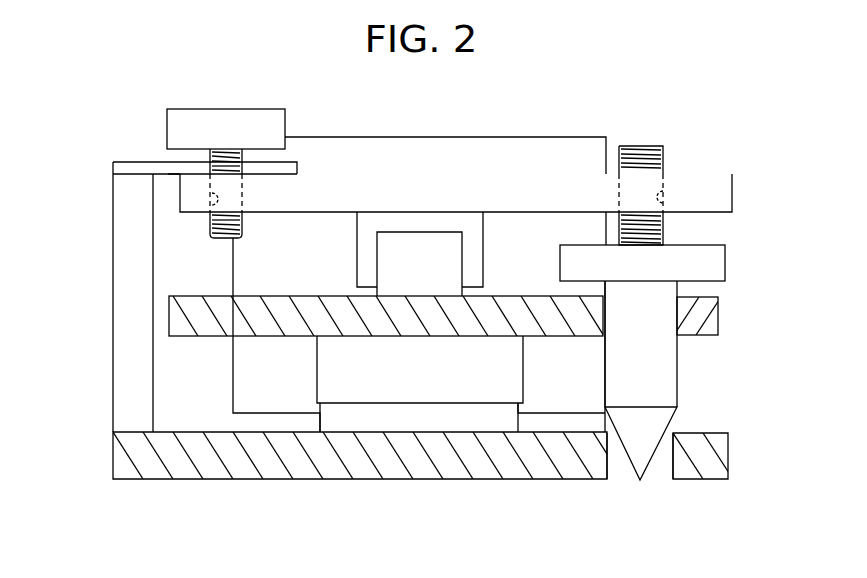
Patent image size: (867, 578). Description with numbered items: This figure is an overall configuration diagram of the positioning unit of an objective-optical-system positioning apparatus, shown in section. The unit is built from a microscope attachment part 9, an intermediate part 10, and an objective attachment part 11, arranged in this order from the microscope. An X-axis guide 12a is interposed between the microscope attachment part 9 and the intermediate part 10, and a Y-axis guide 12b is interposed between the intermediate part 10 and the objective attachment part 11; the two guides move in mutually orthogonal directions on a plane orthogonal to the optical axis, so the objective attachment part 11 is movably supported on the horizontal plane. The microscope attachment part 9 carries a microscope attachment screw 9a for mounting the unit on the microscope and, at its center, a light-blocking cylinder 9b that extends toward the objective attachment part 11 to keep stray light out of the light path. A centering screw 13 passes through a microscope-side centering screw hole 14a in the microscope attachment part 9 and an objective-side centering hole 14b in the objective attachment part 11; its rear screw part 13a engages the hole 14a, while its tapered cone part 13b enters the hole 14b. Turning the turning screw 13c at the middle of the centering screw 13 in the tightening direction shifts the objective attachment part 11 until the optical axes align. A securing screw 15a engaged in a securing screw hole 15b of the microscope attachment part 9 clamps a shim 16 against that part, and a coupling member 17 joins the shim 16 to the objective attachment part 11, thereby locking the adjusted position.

The microscope attachment part 9 is at (732, 190).
The microscope attachment screw 9a is at (582, 137).
The light-blocking cylinder 9b is at (233, 376).
The intermediate part 10 is at (718, 314).
The objective attachment part 11 is at (728, 455).
The X-axis guide 12a is at (357, 255).
The Y-axis guide 12b is at (317, 380).
The centering screw 13 is at (735, 364).
The screw part 13a is at (663, 152).
The cone part 13b is at (670, 424).
The turning screw 13c is at (725, 262).
The microscope-side centering screw hole 14a is at (663, 197).
The objective-side centering hole 14b is at (676, 458).
The securing screw 15a is at (208, 108).
The securing screw hole 15b is at (212, 203).
The shim 16 is at (127, 162).
The coupling member 17 is at (113, 263).